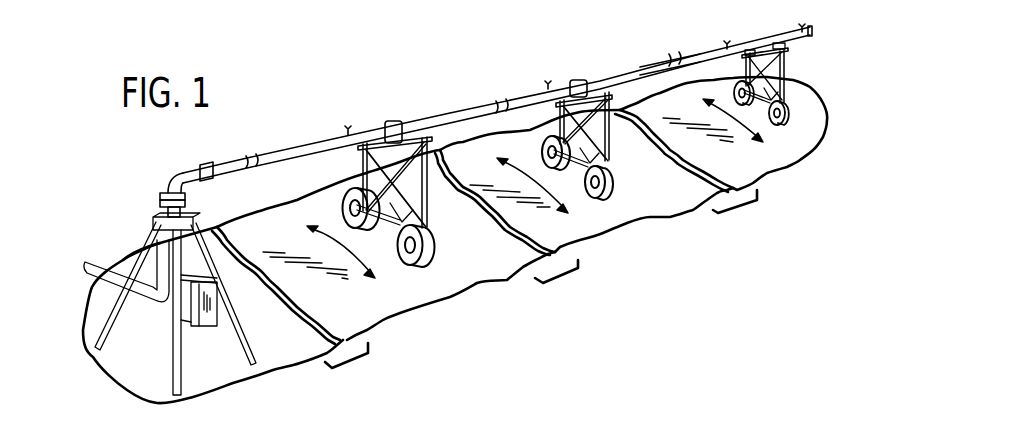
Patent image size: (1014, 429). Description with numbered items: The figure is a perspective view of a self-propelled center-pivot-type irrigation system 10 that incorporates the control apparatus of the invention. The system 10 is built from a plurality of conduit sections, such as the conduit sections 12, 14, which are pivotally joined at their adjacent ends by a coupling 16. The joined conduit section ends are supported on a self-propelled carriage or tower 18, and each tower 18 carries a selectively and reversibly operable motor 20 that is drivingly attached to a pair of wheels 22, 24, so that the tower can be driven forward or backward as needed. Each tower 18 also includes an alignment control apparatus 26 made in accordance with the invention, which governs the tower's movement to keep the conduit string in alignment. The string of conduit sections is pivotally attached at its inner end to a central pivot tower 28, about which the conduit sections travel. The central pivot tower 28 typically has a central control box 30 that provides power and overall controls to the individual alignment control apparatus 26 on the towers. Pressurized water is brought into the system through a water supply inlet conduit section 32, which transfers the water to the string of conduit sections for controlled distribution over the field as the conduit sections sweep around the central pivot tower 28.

The self-propelled center-pivot-type irrigation system 10 is at (393, 98).
The conduit section 12 is at (517, 95).
The conduit section 14 is at (584, 117).
The coupling 16 is at (578, 78).
The self-propelled carriage or tower 18 is at (671, 59).
The motor 20 is at (593, 146).
The wheel 22 is at (613, 183).
The wheel 24 is at (541, 146).
The alignment control apparatus 26 is at (592, 110).
The central pivot tower 28 is at (196, 304).
The central control box 30 is at (207, 317).
The water supply inlet conduit section 32 is at (100, 258).